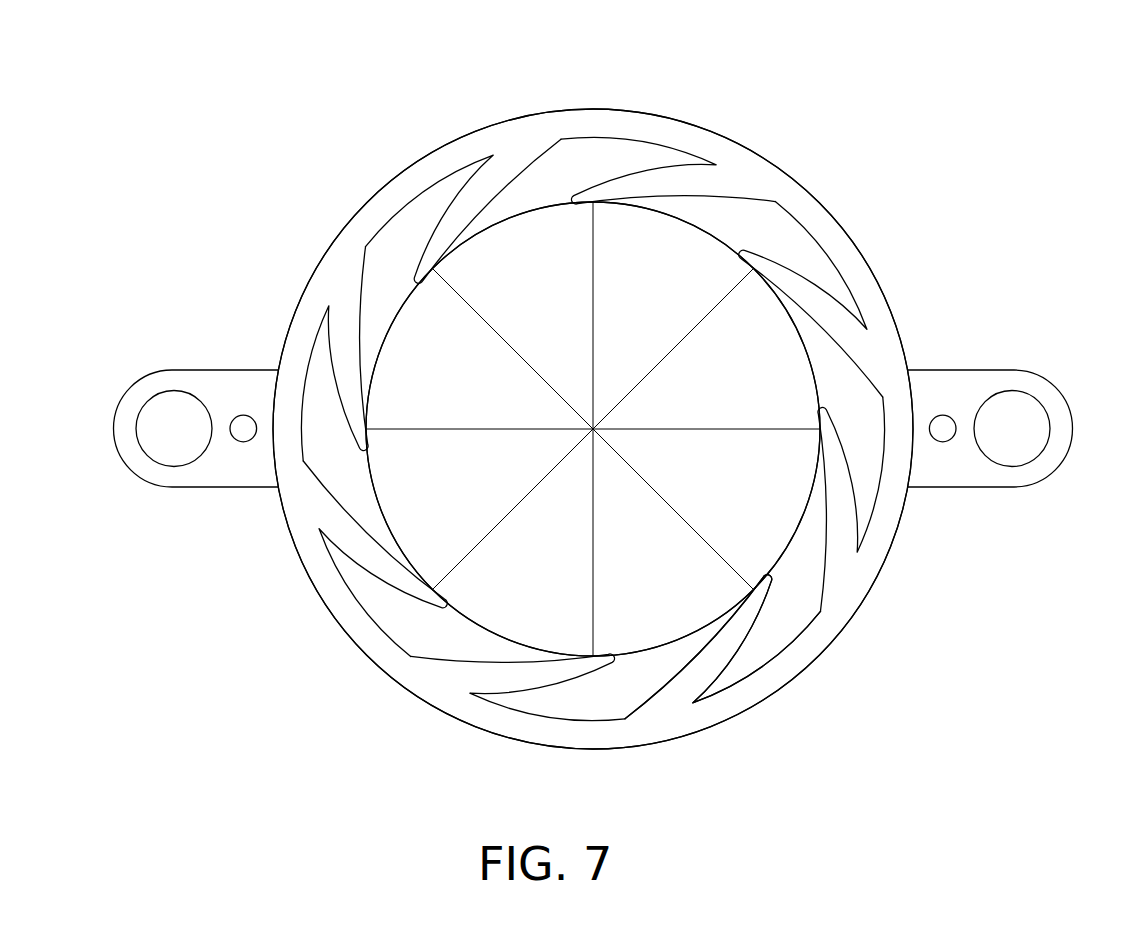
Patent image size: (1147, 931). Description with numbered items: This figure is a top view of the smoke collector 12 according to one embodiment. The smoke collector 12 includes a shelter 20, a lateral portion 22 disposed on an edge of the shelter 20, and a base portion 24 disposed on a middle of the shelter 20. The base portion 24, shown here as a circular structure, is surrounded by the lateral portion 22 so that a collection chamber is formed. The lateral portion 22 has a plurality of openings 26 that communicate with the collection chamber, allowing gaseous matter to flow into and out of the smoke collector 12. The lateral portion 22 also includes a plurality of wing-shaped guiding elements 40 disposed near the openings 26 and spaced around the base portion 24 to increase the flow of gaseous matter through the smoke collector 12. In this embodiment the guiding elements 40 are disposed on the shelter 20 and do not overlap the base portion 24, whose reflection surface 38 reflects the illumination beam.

The smoke collector 12 is at (1046, 97).
The shelter 20 is at (373, 603).
The lateral portion 22 is at (862, 262).
The base portion 24 is at (690, 250).
The openings 26 is at (782, 623).
The reflection surface 38 is at (538, 585).
The guiding elements 40 is at (847, 515).